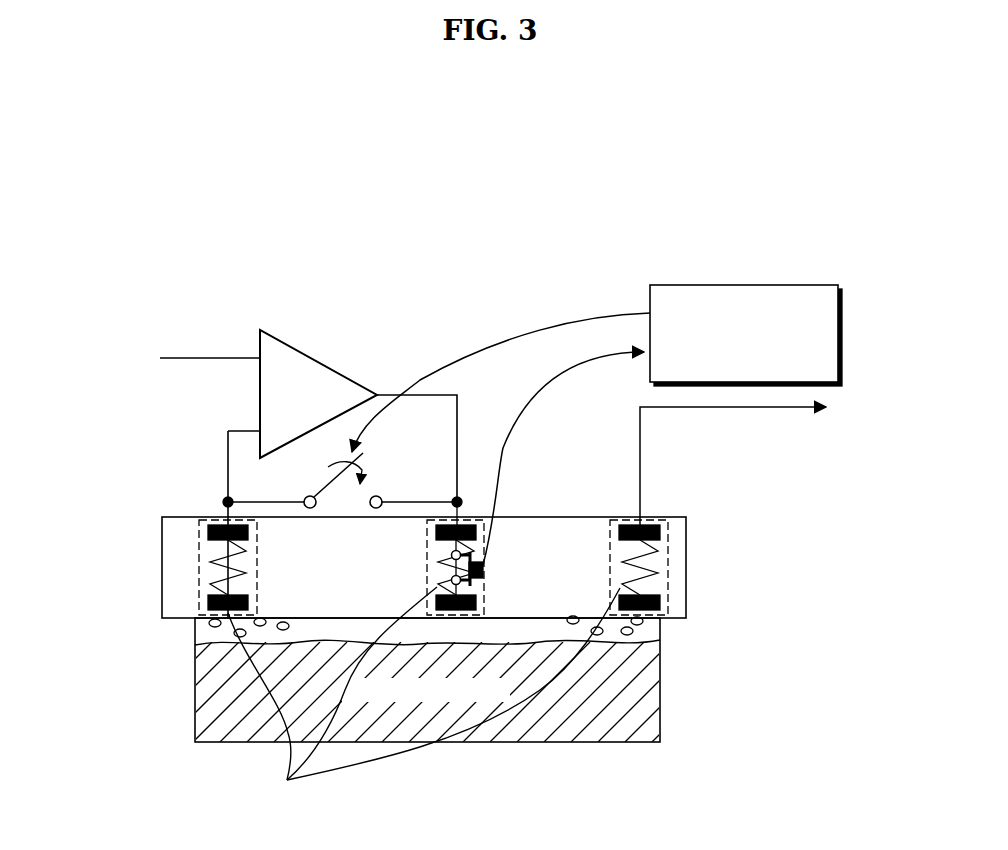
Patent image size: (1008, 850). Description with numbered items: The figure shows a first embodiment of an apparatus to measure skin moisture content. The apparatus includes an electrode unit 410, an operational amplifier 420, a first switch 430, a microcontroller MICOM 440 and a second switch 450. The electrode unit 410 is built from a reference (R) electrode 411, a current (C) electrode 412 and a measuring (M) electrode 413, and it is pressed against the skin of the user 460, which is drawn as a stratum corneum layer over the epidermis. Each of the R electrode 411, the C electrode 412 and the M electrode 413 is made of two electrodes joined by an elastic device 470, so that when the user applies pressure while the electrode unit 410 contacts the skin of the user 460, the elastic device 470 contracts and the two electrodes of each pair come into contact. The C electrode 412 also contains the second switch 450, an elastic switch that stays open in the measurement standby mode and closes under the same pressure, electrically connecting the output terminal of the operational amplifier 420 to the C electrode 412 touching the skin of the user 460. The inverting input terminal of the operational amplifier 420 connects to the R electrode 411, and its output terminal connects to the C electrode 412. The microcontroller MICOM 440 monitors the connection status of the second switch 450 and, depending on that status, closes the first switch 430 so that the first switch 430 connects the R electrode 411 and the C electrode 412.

The electrode unit 410 is at (686, 533).
The reference (R) electrode 411 is at (199, 565).
The current (C) electrode 412 is at (427, 565).
The measuring (M) electrode 413 is at (670, 570).
The operational amplifier 420 is at (318, 358).
The first switch 430 is at (364, 470).
The microcontroller MICOM 440 is at (748, 285).
The second switch 450 is at (483, 570).
The skin of the user 460 is at (660, 633).
The elastic device 470 is at (424, 701).